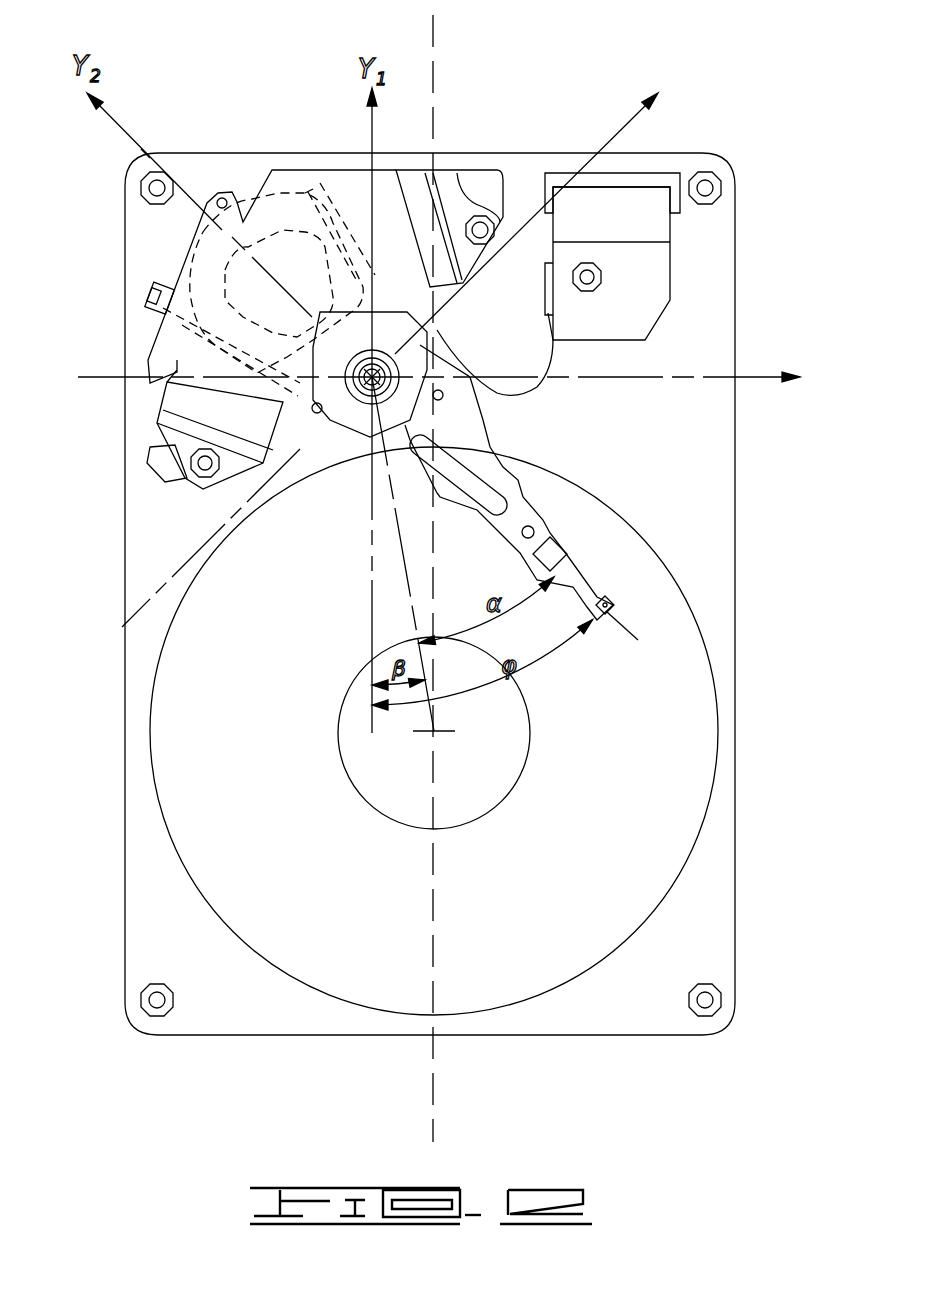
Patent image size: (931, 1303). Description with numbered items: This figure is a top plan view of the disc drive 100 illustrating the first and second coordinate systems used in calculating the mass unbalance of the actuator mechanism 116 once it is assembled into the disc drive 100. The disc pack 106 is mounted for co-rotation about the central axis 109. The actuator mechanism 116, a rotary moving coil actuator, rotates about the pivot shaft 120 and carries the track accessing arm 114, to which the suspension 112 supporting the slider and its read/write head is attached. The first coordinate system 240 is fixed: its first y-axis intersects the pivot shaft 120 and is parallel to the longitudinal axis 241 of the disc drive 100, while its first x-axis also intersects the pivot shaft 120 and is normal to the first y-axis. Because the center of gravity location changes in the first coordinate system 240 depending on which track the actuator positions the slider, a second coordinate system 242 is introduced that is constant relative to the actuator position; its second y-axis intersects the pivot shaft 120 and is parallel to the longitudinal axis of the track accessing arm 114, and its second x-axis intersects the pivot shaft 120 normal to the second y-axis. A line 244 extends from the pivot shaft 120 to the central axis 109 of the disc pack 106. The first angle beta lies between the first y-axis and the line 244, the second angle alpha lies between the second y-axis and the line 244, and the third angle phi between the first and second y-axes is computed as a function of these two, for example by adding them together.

The disc drive 100 is at (752, 90).
The disc pack 106 is at (205, 740).
The central axis 109 is at (434, 731).
The suspension 112 is at (520, 510).
The track accessing arm 114 is at (477, 437).
The actuator mechanism 116 is at (308, 350).
The pivot shaft 120 is at (320, 385).
The first coordinate system 240 is at (648, 384).
The longitudinal axis of disc drive 241 is at (433, 74).
The second coordinate system 242 is at (524, 205).
The line 244 is at (407, 572).